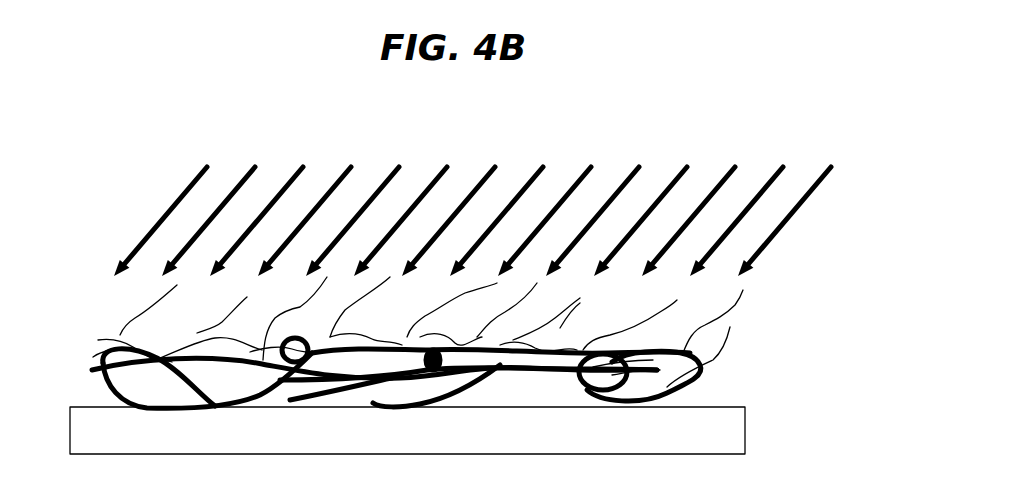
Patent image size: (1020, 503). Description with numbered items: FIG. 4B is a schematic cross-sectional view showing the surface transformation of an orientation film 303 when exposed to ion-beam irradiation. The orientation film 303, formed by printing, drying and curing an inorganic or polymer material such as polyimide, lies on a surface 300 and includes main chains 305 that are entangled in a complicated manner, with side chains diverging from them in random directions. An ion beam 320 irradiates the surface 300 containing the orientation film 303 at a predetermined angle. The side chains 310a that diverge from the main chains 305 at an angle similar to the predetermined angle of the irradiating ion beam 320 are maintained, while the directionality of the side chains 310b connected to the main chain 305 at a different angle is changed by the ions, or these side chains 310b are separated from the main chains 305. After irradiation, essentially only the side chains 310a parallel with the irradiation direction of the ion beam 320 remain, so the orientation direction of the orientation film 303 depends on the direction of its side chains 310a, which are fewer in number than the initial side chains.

The surface 300 is at (757, 435).
The orientation film 303 is at (823, 382).
The main chains 305 is at (715, 377).
The side chains 310a is at (750, 306).
The side chains 310b is at (77, 320).
The ion beam 320 is at (800, 219).